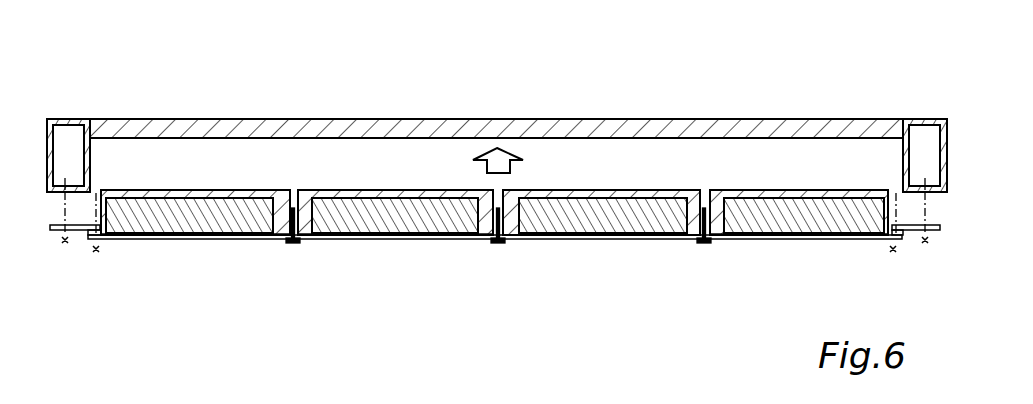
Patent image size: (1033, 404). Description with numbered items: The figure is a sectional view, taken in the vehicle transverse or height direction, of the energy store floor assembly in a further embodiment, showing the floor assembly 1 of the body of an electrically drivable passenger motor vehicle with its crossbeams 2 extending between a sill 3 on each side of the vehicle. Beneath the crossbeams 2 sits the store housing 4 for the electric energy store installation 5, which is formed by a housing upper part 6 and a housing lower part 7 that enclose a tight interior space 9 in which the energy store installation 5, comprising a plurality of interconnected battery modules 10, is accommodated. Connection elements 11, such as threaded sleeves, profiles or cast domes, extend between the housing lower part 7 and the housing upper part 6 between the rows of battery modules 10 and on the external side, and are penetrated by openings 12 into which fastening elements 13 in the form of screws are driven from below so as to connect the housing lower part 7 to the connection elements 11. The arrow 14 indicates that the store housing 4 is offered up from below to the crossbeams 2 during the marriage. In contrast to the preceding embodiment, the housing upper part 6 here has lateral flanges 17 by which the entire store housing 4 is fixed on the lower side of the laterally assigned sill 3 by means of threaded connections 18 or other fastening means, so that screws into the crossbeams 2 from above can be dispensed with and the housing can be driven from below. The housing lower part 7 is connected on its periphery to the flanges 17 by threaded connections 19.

The floor assembly 1 is at (730, 80).
The crossbeams 2 is at (800, 128).
The sill 3 is at (73, 122).
The store housing 4 is at (397, 247).
The electric energy store installation 5 is at (446, 216).
The housing upper part 6 is at (383, 190).
The housing lower part 7 is at (340, 238).
The interior space 9 is at (555, 213).
The battery modules 10 is at (620, 215).
The connection elements 11 is at (722, 236).
The openings 12 is at (705, 190).
The fastening elements 13 is at (292, 244).
The arrow 14 is at (494, 148).
The lateral flanges 17 is at (50, 232).
The threaded connections 18 is at (76, 231).
The threaded connections 19 is at (97, 237).